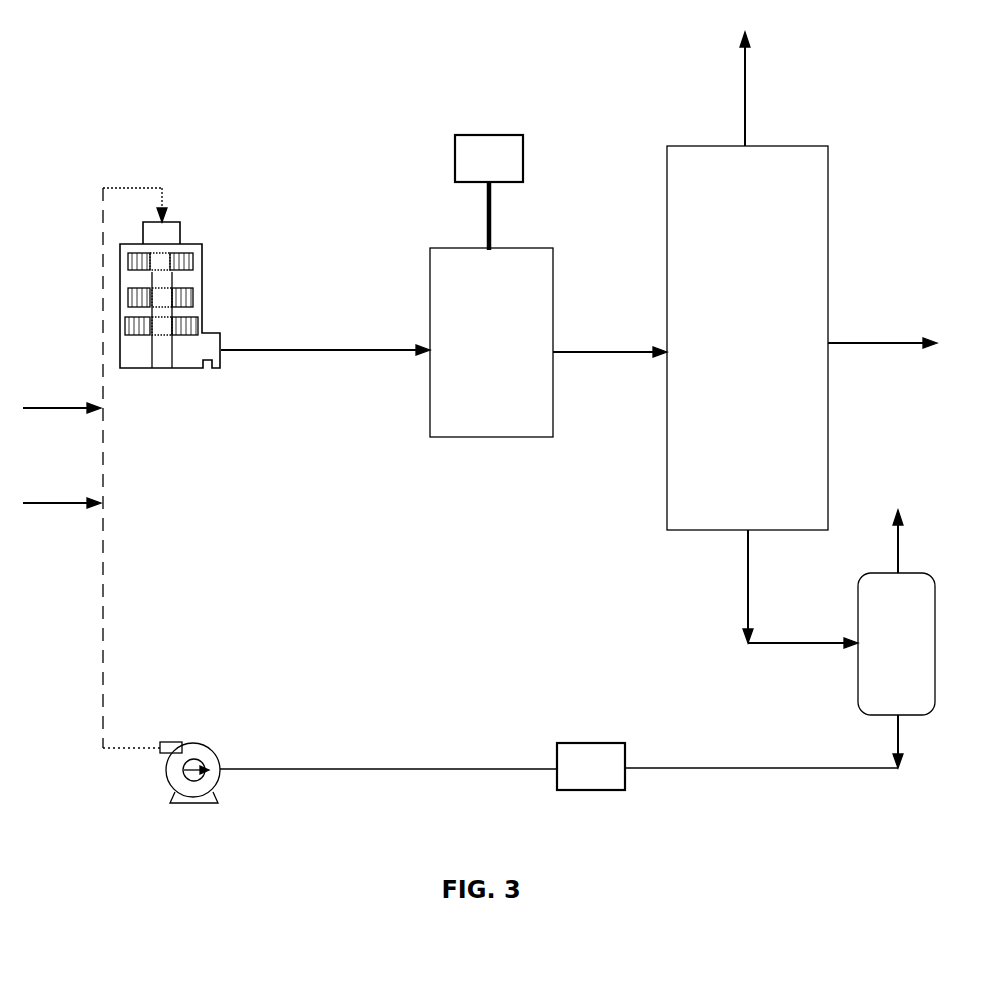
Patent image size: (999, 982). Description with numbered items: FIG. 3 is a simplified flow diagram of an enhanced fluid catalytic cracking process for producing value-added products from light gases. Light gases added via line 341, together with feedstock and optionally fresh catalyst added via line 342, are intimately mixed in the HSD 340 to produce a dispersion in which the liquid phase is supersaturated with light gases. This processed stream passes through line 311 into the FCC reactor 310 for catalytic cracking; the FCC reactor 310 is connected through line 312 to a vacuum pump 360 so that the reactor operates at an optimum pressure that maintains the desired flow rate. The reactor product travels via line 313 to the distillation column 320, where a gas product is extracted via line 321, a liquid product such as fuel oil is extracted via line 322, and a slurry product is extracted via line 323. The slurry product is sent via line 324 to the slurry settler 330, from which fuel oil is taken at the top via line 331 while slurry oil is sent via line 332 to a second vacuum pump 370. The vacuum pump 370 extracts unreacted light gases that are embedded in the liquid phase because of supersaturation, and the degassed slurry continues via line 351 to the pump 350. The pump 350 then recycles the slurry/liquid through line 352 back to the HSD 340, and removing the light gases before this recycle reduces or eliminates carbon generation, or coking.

The FCC reactor 310 is at (460, 402).
The line 311 is at (272, 348).
The line 312 is at (525, 216).
The line 313 is at (610, 337).
The distillation column 320 is at (715, 441).
The line 321 is at (772, 89).
The line 322 is at (882, 328).
The line 323 is at (721, 586).
The line 324 is at (803, 630).
The slurry settler 330 is at (875, 666).
The line 331 is at (926, 541).
The line 332 is at (927, 741).
The HSD 340 is at (195, 242).
The line 341 is at (62, 389).
The line 342 is at (62, 488).
The pump 350 is at (192, 803).
The line 351 is at (280, 768).
The line 352 is at (105, 677).
The vacuum pump 360 is at (468, 121).
The vacuum pump 370 is at (563, 732).